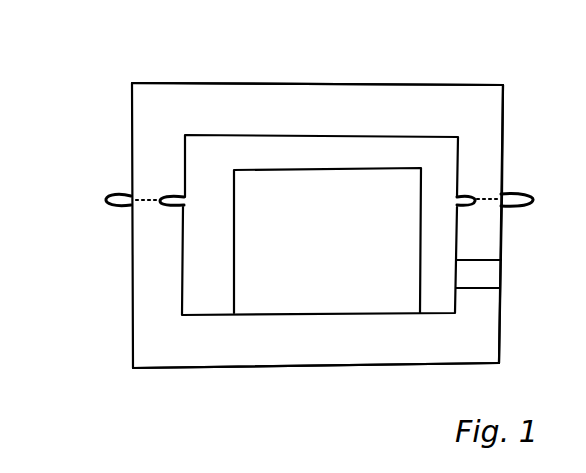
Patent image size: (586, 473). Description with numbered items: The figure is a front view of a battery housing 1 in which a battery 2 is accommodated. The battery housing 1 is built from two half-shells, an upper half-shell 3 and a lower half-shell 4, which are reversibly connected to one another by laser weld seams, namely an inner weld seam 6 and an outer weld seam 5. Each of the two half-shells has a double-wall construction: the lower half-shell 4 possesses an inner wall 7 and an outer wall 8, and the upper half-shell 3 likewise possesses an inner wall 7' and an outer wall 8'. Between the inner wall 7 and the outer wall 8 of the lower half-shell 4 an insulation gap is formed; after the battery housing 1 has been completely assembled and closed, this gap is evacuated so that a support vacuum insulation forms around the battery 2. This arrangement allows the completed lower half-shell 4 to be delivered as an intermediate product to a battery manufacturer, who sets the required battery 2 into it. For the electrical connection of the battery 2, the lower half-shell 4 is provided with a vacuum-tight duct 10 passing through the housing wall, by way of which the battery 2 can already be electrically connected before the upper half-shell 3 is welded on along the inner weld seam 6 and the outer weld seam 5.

The battery housing 1 is at (217, 368).
The battery 2 is at (332, 305).
The upper half-shell 3 is at (338, 100).
The lower half-shell 4 is at (408, 352).
The outer weld seam 5 is at (113, 210).
The inner weld seam 6 is at (180, 205).
The inner wall 7 is at (263, 330).
The inner wall 7' is at (252, 151).
The outer wall 8 is at (524, 279).
The outer wall 8' is at (538, 140).
The vacuum-tight duct 10 is at (493, 279).